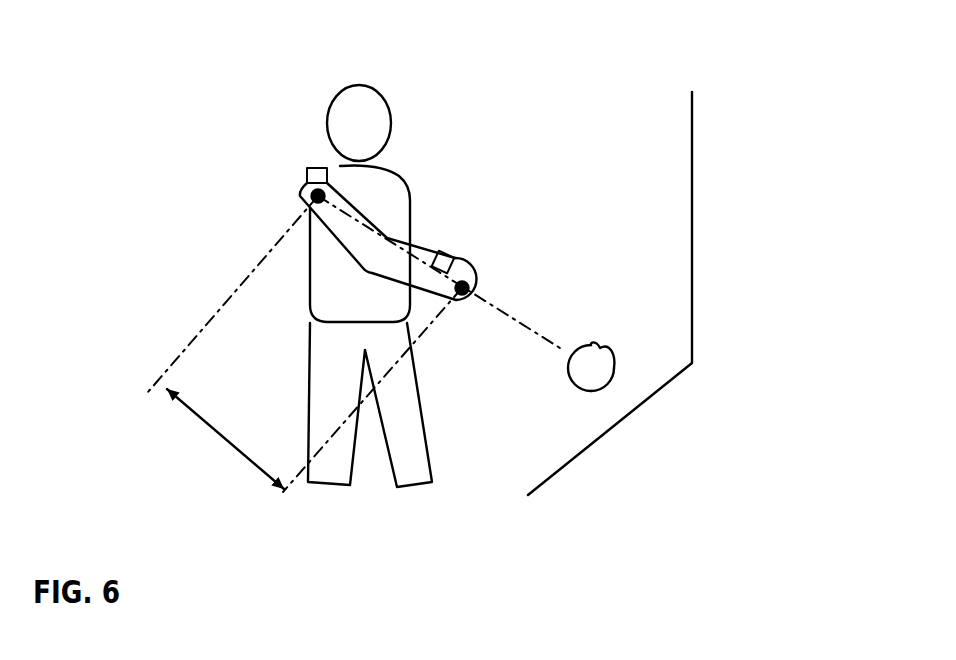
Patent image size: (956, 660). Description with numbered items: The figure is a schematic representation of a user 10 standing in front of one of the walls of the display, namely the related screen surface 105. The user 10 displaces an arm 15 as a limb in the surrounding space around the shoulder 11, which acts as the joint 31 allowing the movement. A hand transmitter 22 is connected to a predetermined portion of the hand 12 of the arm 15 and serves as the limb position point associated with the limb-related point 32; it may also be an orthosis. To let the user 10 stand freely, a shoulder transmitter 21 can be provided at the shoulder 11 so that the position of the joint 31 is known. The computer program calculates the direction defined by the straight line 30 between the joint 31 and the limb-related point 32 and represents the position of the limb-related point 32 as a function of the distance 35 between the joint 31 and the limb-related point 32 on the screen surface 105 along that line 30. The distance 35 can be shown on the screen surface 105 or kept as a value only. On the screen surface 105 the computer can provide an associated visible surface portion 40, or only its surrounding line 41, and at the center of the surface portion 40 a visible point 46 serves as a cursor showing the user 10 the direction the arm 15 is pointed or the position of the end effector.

The user 10 is at (384, 259).
The shoulder 11 is at (295, 209).
The hand 12 is at (487, 279).
The arm 15 is at (364, 281).
The shoulder transmitter 21 is at (312, 158).
The hand transmitter 22 is at (449, 251).
The straight line 30 is at (527, 320).
The joint 31 is at (308, 190).
The limb-related point 32 is at (460, 303).
The distance 35 is at (233, 342).
The visible surface portion 40 is at (640, 383).
The surrounding line 41 is at (596, 399).
The visible point 46 is at (596, 370).
The screen surface 105 is at (669, 232).